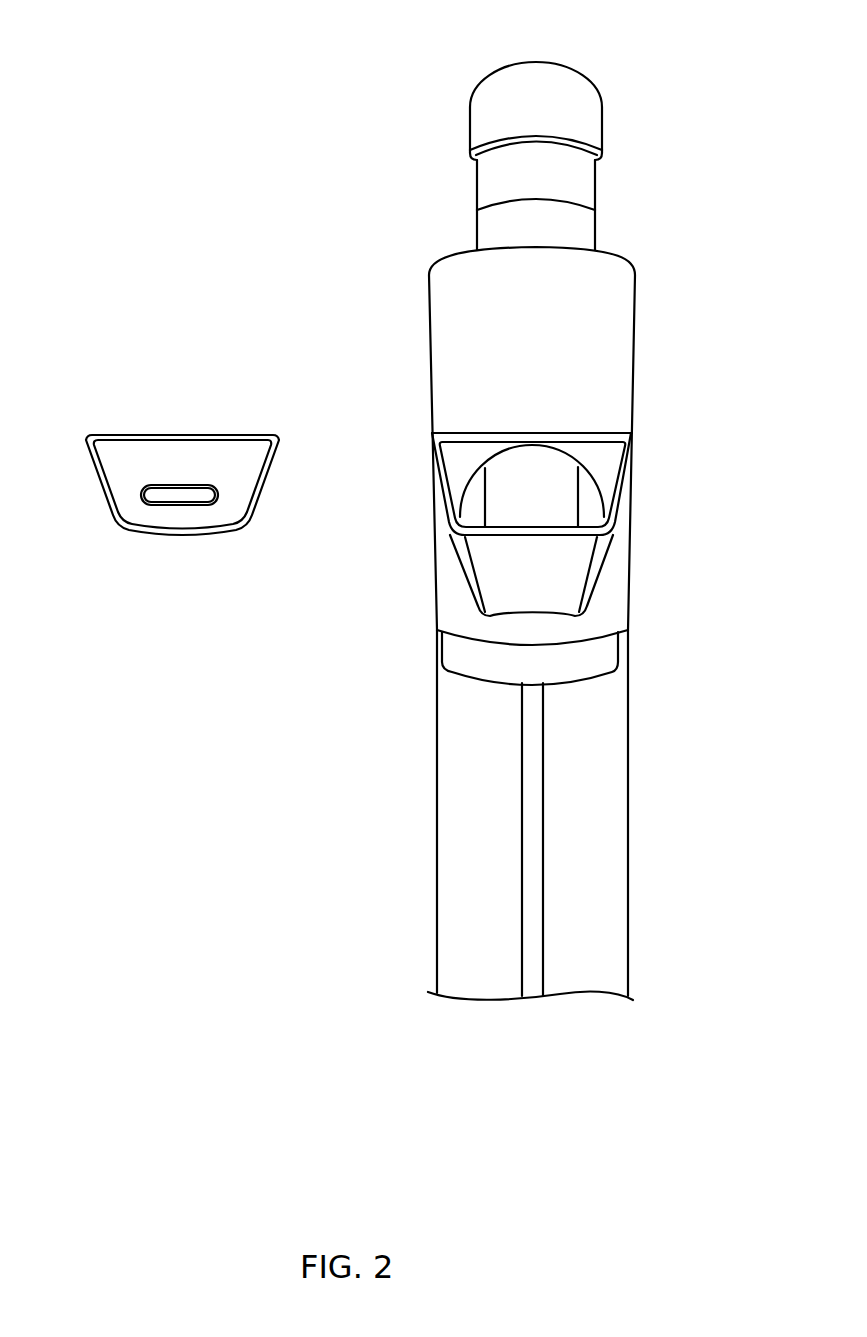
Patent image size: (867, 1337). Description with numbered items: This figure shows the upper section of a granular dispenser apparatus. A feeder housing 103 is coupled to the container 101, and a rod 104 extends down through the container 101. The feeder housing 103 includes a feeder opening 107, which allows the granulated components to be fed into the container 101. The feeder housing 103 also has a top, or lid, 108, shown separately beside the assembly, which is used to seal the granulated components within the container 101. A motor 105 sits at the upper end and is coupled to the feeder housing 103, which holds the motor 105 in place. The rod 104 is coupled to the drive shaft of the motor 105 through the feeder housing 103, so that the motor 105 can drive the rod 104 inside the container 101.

The container 101 is at (627, 845).
The feeder housing 103 is at (634, 331).
The rod 104 is at (522, 893).
The motor 105 is at (497, 65).
The feeder opening 107 is at (470, 450).
The top (or lid) 108 is at (135, 432).